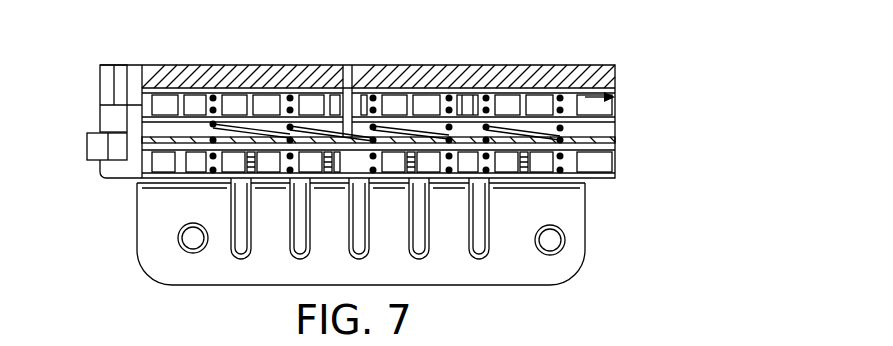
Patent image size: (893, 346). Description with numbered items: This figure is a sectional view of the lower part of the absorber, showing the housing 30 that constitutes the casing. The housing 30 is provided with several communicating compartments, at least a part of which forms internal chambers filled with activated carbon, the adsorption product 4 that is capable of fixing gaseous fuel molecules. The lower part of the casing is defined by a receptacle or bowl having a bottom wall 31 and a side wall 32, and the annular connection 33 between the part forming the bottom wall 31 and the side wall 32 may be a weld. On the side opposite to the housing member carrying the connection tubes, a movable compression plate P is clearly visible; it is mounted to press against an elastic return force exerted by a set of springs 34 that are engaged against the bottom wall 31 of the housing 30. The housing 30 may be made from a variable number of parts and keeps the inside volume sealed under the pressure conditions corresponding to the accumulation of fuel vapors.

The adsorption product 4 is at (541, 80).
The housing 30 is at (117, 79).
The bottom wall 31 is at (152, 185).
The side wall 32 is at (128, 105).
The annular connection 33 is at (116, 146).
The springs 34 is at (563, 128).
The movable compression plate P is at (580, 86).